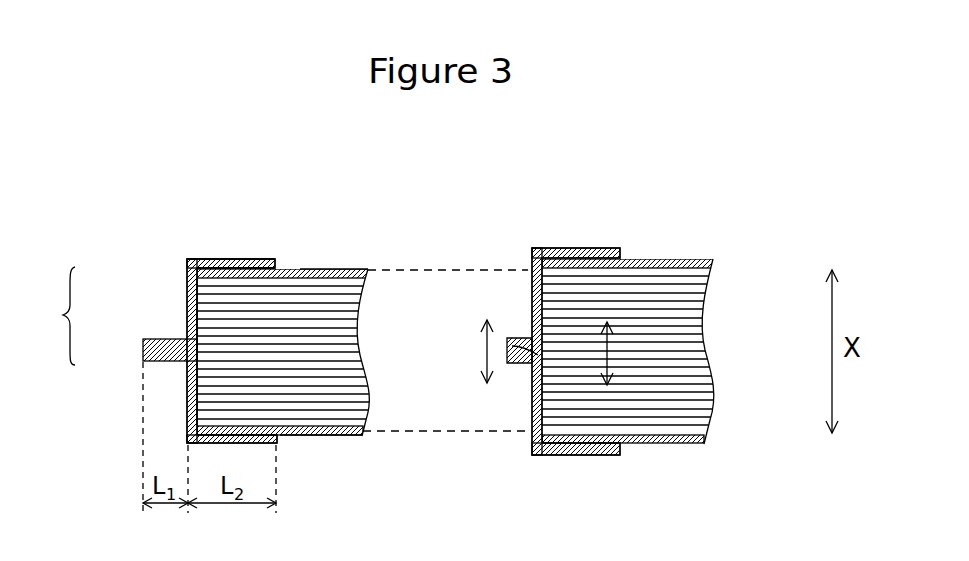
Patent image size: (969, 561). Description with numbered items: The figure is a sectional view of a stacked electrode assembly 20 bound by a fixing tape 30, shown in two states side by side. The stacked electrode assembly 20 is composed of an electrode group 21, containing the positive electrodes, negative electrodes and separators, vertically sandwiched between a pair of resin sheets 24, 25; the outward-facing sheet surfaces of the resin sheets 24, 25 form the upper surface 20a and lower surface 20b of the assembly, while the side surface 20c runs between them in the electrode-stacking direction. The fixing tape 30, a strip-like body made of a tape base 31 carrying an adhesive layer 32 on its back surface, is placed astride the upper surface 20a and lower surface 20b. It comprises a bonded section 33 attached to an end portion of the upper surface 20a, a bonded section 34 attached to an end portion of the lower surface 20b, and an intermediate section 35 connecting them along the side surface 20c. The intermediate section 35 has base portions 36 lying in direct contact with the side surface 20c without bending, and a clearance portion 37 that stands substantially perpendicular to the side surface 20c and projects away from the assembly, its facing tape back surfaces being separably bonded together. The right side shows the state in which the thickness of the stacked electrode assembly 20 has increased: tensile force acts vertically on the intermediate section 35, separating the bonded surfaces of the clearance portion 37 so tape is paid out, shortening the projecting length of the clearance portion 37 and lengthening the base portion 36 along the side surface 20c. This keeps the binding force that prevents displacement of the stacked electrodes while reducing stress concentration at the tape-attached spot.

The stacked electrode assembly 20 is at (385, 395).
The upper surface 20a is at (345, 268).
The lower surface 20b is at (334, 437).
The side surface 20c is at (186, 283).
The electrode group 21 is at (360, 345).
The resin sheet 24 is at (368, 270).
The resin sheet 25 is at (353, 437).
The fixing tape 30 is at (213, 237).
The tape base 31 is at (268, 258).
The adhesive layer 32 is at (278, 268).
The bonded section 33 is at (250, 258).
The bonded section 34 is at (240, 444).
The intermediate section 35 is at (55, 316).
The base portion 36 is at (187, 292).
The clearance portion 37 is at (143, 347).